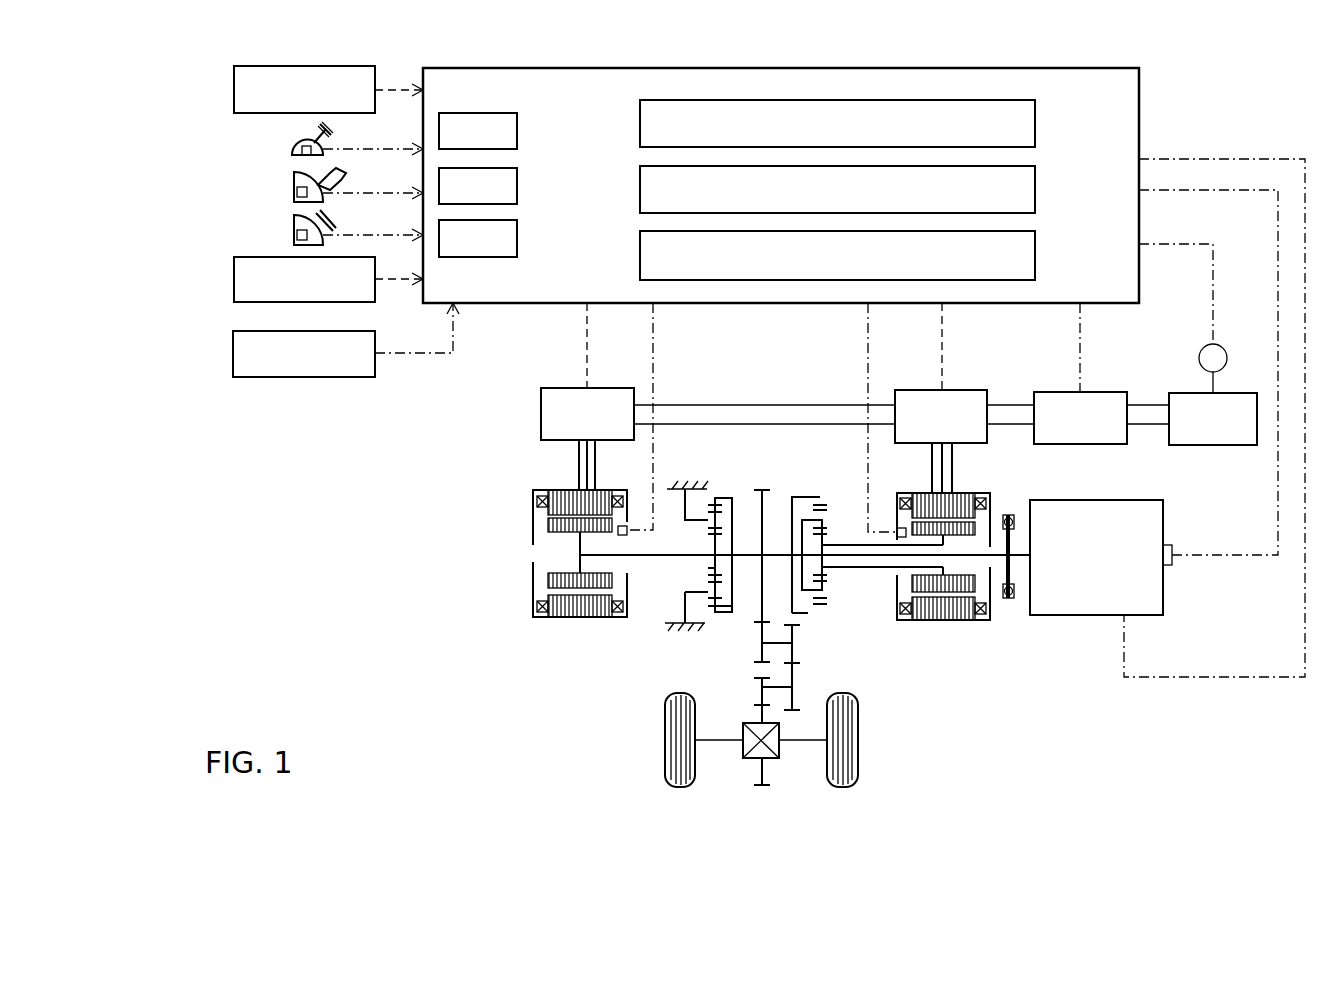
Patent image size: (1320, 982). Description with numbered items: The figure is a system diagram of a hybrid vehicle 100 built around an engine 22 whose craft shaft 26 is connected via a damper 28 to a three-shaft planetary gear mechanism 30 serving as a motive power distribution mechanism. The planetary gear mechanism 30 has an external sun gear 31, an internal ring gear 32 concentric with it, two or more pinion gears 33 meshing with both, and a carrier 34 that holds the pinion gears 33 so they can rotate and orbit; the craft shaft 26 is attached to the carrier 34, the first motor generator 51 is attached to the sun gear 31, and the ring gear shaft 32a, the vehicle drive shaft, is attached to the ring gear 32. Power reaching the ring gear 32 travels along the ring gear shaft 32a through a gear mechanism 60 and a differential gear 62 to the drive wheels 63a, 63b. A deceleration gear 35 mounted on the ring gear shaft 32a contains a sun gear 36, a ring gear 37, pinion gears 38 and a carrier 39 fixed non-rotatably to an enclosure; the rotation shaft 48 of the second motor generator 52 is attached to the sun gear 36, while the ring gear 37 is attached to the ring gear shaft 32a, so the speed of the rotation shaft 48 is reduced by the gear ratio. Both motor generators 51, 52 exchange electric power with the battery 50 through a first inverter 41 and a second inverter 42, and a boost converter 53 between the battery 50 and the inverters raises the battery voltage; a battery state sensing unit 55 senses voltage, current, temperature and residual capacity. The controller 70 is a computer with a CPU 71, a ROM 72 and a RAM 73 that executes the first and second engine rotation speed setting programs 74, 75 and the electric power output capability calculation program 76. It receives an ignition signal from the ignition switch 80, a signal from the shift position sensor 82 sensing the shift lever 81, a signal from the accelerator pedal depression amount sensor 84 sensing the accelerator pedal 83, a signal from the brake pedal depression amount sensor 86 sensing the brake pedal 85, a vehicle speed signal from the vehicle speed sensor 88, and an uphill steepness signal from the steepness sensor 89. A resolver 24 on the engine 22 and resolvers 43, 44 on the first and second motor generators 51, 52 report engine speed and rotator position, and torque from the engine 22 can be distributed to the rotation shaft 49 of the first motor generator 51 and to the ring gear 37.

The hybrid vehicle 100 is at (1113, 49).
The controller 70 is at (515, 68).
The CPU 71 is at (517, 131).
The ROM 72 is at (517, 186).
The RAM 73 is at (517, 240).
The first engine rotation speed setting program 74 is at (1035, 126).
The second engine rotation speed setting program 75 is at (1035, 192).
The electric power output capability calculation program 76 is at (1035, 258).
The ignition switch 80 is at (234, 91).
The shift lever 81 is at (320, 130).
The shift position sensor 82 is at (292, 150).
The accelerator pedal 83 is at (332, 172).
The accelerator pedal depression amount sensor 84 is at (294, 193).
The brake pedal 85 is at (328, 222).
The brake pedal depression amount sensor 86 is at (294, 235).
The vehicle speed sensor 88 is at (234, 282).
The steepness sensor 89 is at (233, 353).
The second inverter 42 is at (545, 388).
The first inverter 41 is at (972, 390).
The boost converter 53 is at (1112, 392).
The battery 50 is at (1232, 393).
The battery state sensing unit 55 is at (1226, 346).
The second motor generator 52 is at (540, 617).
The first motor generator 51 is at (945, 620).
The resolver 44 is at (622, 526).
The resolver 43 is at (897, 528).
The rotation shaft 48 is at (648, 560).
The rotation shaft 49 is at (833, 482).
The deceleration gear 35 is at (701, 554).
The carrier 39 is at (702, 532).
The sun gear 36 is at (712, 570).
The pinion gears 38 is at (700, 591).
The ring gear 37 is at (710, 612).
The ring gear shaft 32a is at (746, 548).
The planetary gear mechanism 30 is at (867, 542).
The sun gear 31 is at (822, 578).
The pinion gears 33 is at (822, 597).
The carrier 34 is at (803, 520).
The ring gear 32 is at (822, 606).
The craft shaft 26 is at (1022, 560).
The damper 28 is at (1007, 600).
The engine 22 is at (1165, 524).
The resolver 24 is at (1172, 572).
The gear mechanism 60 is at (815, 676).
The differential gear 62 is at (779, 750).
The drive wheel 63a is at (665, 765).
The drive wheel 63b is at (858, 770).